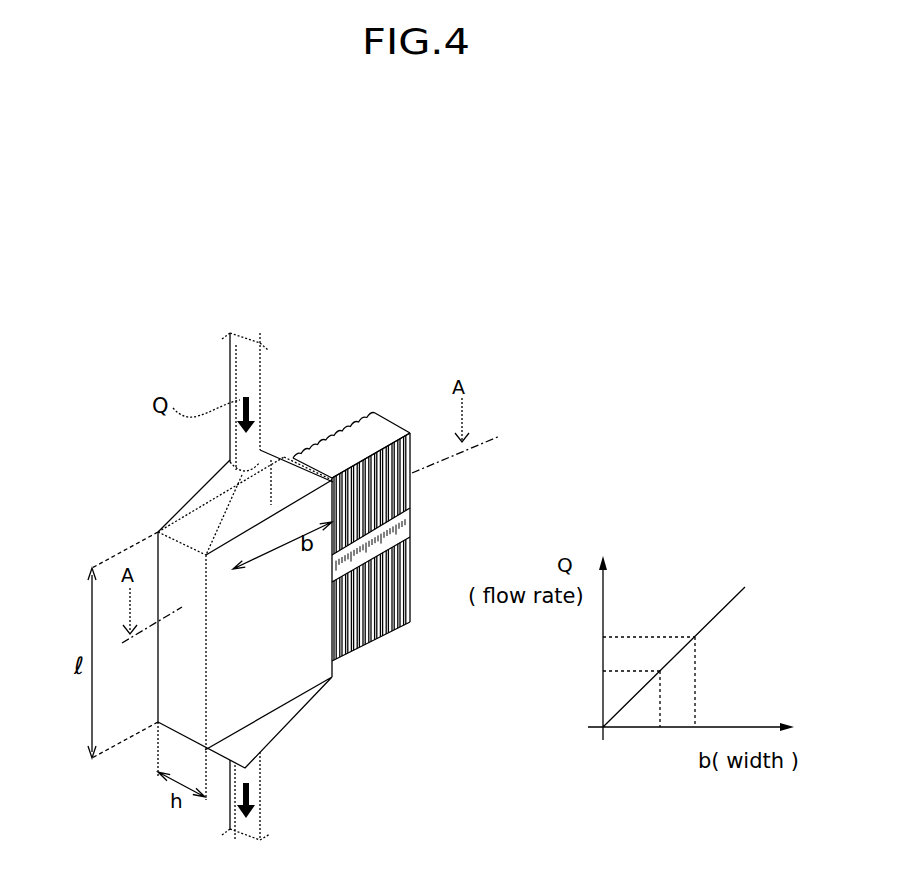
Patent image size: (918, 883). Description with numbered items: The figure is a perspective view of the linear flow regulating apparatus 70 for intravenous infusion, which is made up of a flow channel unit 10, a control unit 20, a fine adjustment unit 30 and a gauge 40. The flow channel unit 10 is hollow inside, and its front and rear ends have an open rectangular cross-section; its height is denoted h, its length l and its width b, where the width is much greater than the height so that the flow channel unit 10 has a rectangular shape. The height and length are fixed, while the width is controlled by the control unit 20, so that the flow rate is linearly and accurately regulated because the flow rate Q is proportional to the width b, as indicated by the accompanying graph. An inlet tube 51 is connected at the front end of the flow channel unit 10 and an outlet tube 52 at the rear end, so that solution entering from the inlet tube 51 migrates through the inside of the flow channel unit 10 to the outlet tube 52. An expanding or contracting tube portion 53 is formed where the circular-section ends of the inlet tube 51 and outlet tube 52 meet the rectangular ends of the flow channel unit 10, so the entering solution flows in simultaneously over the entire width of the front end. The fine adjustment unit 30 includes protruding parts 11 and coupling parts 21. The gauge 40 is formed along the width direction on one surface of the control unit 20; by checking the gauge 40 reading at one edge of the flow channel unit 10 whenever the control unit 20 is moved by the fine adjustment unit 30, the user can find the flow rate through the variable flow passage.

The flow channel unit 10 is at (165, 515).
The protruding parts 11 is at (274, 452).
The control unit 20 is at (397, 634).
The coupling parts 21 is at (340, 434).
The fine adjustment unit 30 is at (358, 358).
The gauge 40 is at (408, 522).
The inlet tube 51 is at (247, 373).
The outlet tube 52 is at (255, 800).
The expanding or contracting tube portion 53 is at (203, 505).
The linear flow regulating apparatus 70 is at (406, 356).